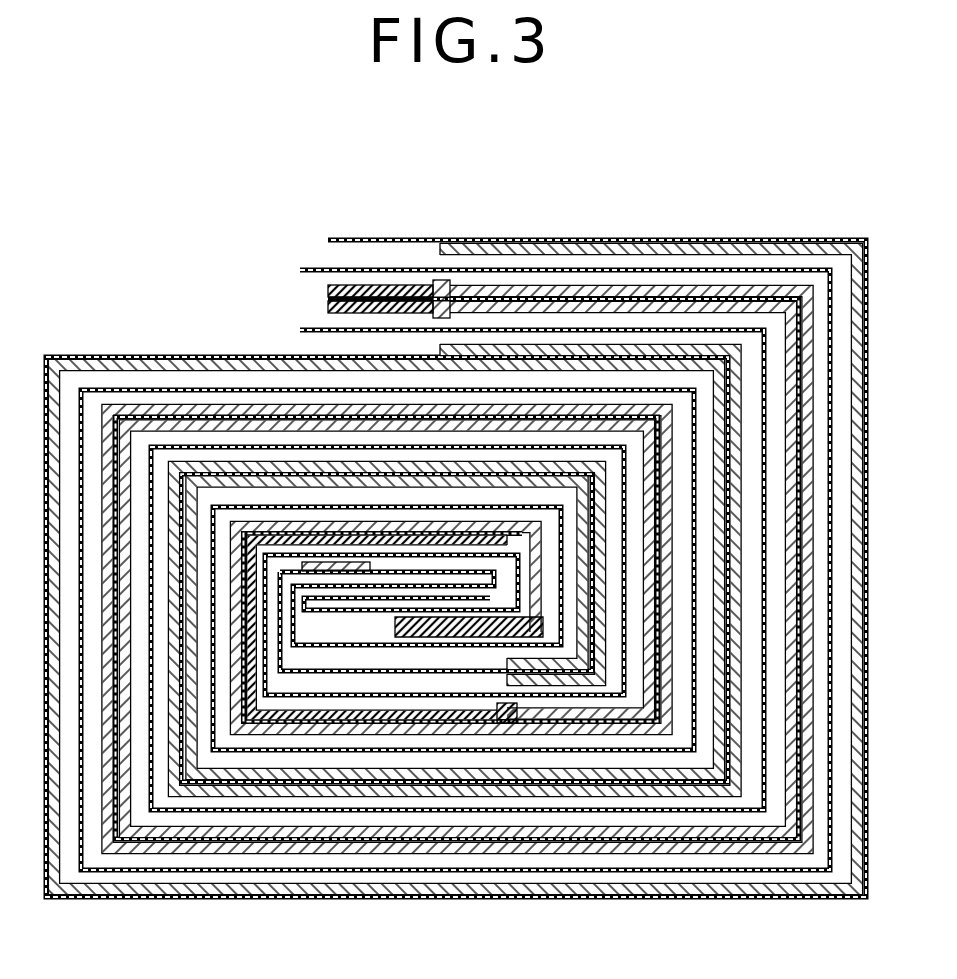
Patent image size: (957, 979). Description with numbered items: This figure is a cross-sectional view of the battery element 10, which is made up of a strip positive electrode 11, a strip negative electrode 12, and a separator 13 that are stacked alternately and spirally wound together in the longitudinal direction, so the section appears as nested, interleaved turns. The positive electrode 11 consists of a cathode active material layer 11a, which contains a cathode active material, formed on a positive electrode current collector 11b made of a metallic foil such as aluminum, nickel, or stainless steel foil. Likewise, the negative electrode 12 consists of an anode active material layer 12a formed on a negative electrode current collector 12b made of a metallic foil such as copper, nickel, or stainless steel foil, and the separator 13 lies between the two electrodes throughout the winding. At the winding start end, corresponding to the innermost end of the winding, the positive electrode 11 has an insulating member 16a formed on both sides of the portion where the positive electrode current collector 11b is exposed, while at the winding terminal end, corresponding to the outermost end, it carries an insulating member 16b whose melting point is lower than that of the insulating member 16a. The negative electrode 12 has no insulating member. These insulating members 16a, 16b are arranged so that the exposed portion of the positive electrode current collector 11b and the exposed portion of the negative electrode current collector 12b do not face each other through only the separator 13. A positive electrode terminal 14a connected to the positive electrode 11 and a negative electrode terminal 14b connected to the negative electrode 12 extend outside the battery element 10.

The battery element 10 is at (477, 128).
The positive electrode 11 is at (824, 192).
The cathode active material layer 11a is at (740, 290).
The positive electrode current collector 11b is at (781, 298).
The negative electrode 12 is at (687, 172).
The anode active material layer 12a is at (603, 238).
The negative electrode current collector 12b is at (662, 246).
The separator 13 is at (492, 266).
The positive electrode terminal 14a is at (486, 640).
The negative electrode terminal 14b is at (321, 572).
The insulating member 16a is at (455, 638).
The insulating member 16b is at (360, 296).